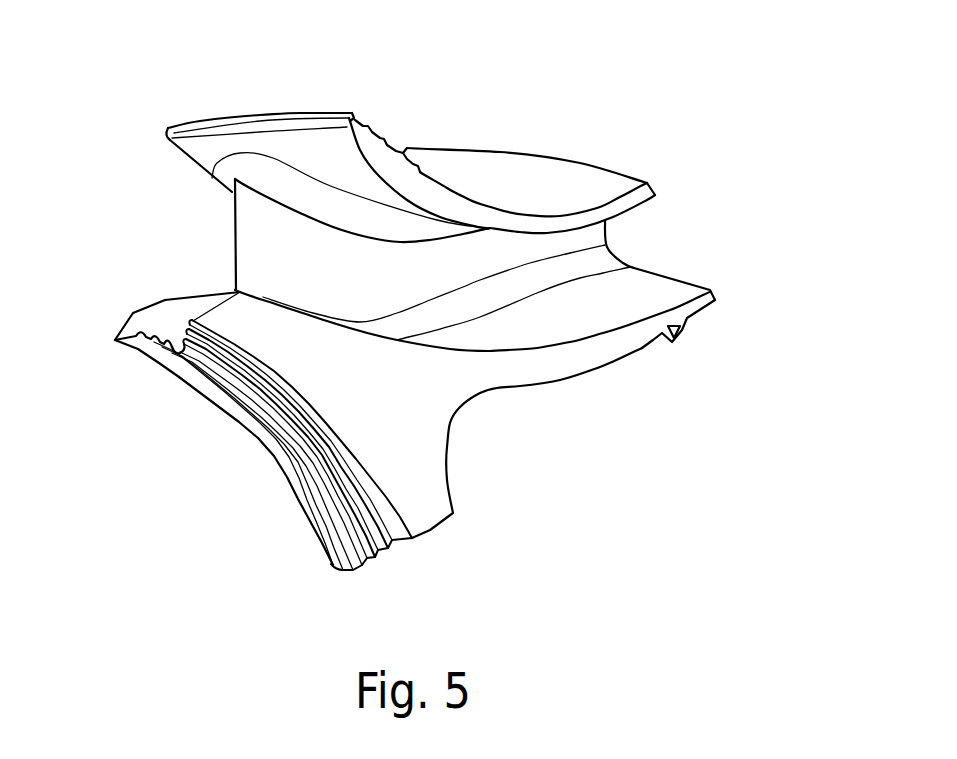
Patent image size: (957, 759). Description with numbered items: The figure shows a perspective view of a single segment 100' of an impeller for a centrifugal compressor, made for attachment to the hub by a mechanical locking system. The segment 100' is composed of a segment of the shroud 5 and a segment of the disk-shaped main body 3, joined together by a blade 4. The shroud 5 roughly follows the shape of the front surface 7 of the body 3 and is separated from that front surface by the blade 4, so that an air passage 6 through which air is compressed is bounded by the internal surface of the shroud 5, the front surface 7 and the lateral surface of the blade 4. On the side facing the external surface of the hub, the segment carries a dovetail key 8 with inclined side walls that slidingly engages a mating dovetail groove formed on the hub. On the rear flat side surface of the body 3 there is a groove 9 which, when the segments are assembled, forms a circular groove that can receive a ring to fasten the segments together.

The segment 100' is at (205, 77).
The main body 3 is at (398, 418).
The blade 4 is at (259, 228).
The shroud 5 is at (533, 193).
The air passage 6 is at (639, 237).
The front surface 7 is at (618, 327).
The dovetail key 8 is at (262, 443).
The groove 9 is at (665, 355).